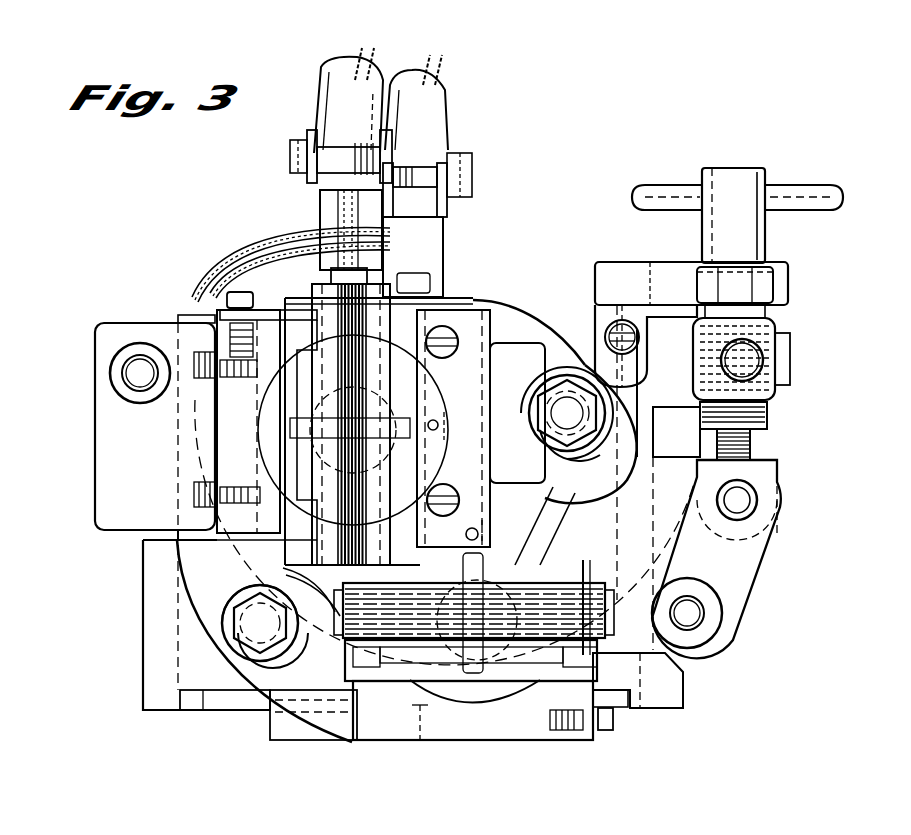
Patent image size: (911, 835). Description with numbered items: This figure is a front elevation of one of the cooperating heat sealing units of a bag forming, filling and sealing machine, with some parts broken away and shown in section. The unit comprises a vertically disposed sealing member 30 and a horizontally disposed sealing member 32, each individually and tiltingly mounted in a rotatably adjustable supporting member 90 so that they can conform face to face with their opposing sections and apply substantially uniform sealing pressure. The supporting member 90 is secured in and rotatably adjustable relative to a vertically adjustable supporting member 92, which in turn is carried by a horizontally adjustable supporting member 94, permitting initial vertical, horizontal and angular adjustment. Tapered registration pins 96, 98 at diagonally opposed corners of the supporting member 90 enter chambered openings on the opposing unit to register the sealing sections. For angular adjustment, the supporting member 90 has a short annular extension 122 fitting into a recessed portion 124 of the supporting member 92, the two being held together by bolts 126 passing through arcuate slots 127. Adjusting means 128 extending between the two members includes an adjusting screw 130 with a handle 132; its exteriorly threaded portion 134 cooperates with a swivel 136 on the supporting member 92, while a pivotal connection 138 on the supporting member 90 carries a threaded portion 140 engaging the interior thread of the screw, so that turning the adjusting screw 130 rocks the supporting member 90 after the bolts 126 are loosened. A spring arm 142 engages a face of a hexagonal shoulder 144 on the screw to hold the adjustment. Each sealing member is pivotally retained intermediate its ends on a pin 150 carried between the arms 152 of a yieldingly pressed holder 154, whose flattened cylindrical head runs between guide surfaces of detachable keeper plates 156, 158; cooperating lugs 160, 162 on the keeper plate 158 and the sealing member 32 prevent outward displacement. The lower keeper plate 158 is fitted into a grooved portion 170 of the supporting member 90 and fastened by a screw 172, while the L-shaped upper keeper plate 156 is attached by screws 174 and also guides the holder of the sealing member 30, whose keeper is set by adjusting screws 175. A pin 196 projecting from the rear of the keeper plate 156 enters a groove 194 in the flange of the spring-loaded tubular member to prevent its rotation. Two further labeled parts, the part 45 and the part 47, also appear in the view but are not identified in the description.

The sealing member 30 is at (446, 298).
The sealing member 32 is at (520, 632).
The pivot shaft 45 is at (425, 460).
The cable 47 is at (365, 272).
The rotatably adjustable supporting member 90 is at (325, 725).
The vertically adjustable supporting member 92 is at (565, 340).
The horizontally adjustable supporting member 94 is at (147, 704).
The registration pin 96 is at (692, 617).
The registration pin 98 is at (133, 372).
The annular extension 122 is at (257, 742).
The recessed portion 124 is at (257, 742).
The bolts 126 is at (552, 452).
The arcuate slots 127 is at (543, 373).
The adjusting means 128 is at (815, 252).
The adjusting screw 130 is at (722, 170).
The handle 132 is at (787, 188).
The exteriorly threaded portion 134 is at (767, 415).
The swivel 136 is at (792, 364).
The pivotal connection 138 is at (778, 486).
The threaded portion 140 is at (753, 446).
The spring arm 142 is at (666, 216).
The hexagonal shoulder 144 is at (773, 285).
The pin 150 is at (463, 563).
The arms 152 is at (572, 542).
The holder 154 is at (425, 403).
The keeper plate 156 is at (490, 468).
The keeper plate 158 is at (277, 322).
The lug 160 is at (312, 528).
The lug 162 is at (330, 548).
The grooved portion 170 is at (420, 720).
The screw 172 is at (237, 292).
The screws 174 is at (471, 302).
The adjusting screws 175 is at (197, 357).
The groove 194 is at (445, 440).
The pin 196 is at (440, 425).